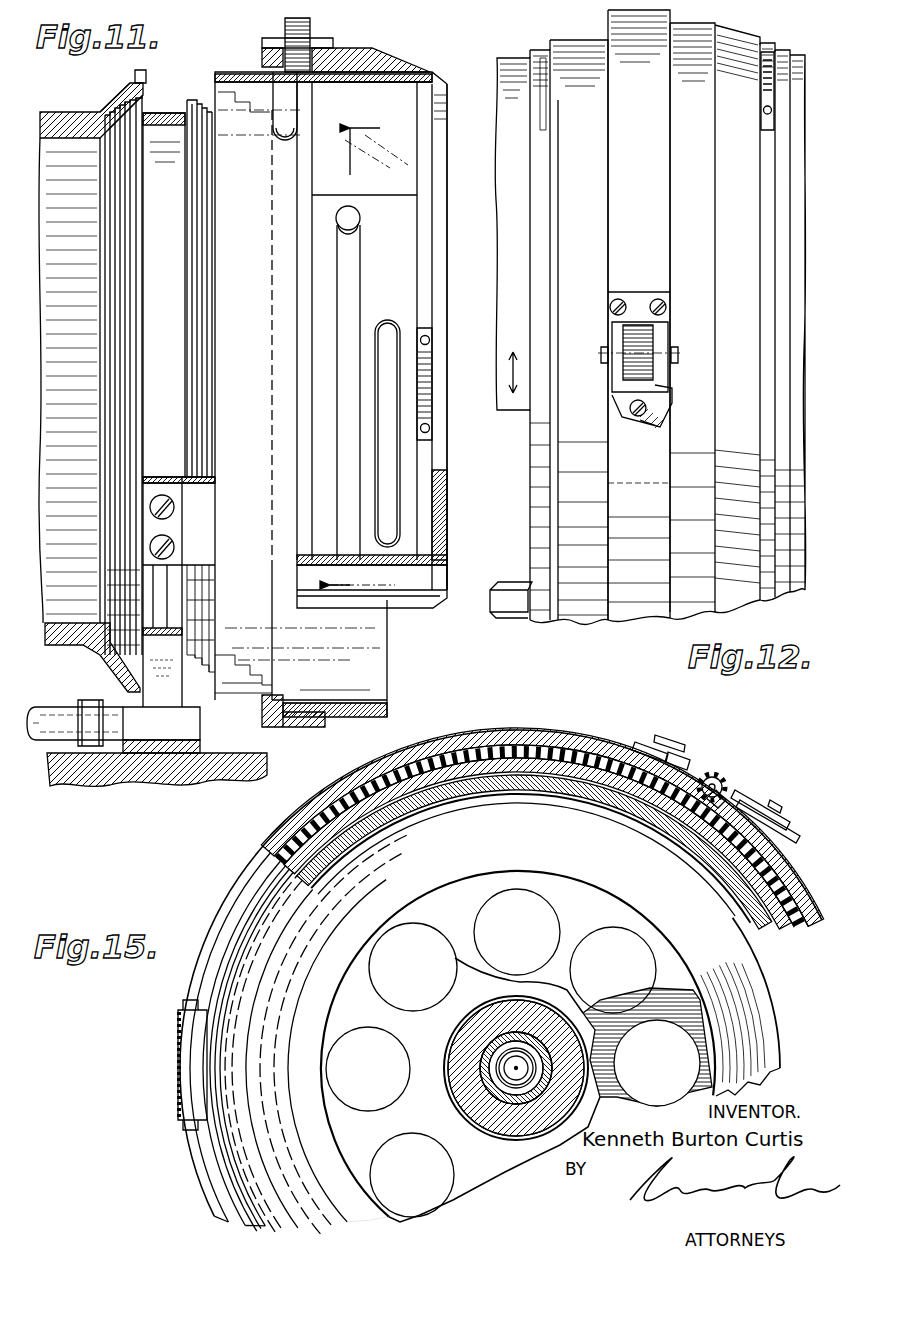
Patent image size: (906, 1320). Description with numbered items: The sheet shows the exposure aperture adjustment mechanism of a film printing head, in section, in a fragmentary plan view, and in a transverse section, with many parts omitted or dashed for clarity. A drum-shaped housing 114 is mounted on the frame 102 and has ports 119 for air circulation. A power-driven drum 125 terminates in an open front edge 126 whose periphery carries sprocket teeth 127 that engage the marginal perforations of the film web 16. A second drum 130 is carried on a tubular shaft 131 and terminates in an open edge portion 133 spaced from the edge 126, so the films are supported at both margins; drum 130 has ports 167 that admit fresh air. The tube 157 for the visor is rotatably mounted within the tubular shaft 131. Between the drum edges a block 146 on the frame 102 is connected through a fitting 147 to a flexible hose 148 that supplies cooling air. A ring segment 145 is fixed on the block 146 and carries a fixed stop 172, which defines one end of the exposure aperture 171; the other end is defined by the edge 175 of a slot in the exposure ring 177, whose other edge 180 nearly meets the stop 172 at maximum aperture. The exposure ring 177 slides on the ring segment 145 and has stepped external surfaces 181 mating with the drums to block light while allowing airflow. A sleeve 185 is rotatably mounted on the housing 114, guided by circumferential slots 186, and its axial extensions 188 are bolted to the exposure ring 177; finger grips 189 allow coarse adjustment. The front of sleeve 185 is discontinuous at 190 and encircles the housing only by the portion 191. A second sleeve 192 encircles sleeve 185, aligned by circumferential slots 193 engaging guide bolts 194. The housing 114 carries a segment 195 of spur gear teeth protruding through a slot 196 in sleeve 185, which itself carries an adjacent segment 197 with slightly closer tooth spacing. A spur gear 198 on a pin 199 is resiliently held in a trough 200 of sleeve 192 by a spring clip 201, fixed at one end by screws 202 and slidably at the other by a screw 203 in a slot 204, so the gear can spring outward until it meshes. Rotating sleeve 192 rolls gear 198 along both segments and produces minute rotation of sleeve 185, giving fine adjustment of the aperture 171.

In FIG. 11, the frame 102 is at (68, 775).
In FIG. 11, the drum shaped housing 114 is at (392, 92).
In FIG. 12, the drum shaped housing 114 is at (795, 258).
In FIG. 15, the drum shaped housing 114 is at (503, 790).
In FIG. 15, the ports 119 is at (368, 1038).
In FIG. 11, the drum 125 is at (46, 112).
In FIG. 11, the open front edge 126 is at (146, 74).
In FIG. 11, the sprocket teeth 127 is at (136, 78).
In FIG. 11, the drum 130 is at (235, 130).
In FIG. 12, the drum 130 is at (543, 82).
In FIG. 15, the drum 130 is at (574, 853).
In FIG. 15, the tubular shaft 131 is at (478, 1050).
In FIG. 11, the open edge portion 133 is at (186, 85).
In FIG. 15, the ring segment 145 is at (366, 860).
In FIG. 11, the block 146 is at (190, 716).
In FIG. 11, the fitting 147 is at (108, 703).
In FIG. 11, the flexible hose 148 is at (50, 707).
In FIG. 15, the tube 157 is at (493, 1078).
In FIG. 15, the ports 167 is at (435, 945).
In FIG. 12, the exposure aperture 171 is at (597, 500).
In FIG. 12, the fixed stop 172 is at (533, 580).
In FIG. 15, the fixed stop 172 is at (410, 830).
In FIG. 12, the edge 175 is at (524, 414).
In FIG. 15, the edge 175 is at (628, 826).
In FIG. 11, the exposure ring 177 is at (152, 452).
In FIG. 12, the exposure ring 177 is at (507, 212).
In FIG. 15, the exposure ring 177 is at (660, 850).
In FIG. 12, the edge 180 is at (512, 614).
In FIG. 15, the edge 180 is at (420, 805).
In FIG. 11, the stepped external surfaces 181 is at (122, 98).
In FIG. 11, the sleeve 185 is at (428, 162).
In FIG. 12, the sleeve 185 is at (780, 52).
In FIG. 15, the sleeve 185 is at (497, 760).
In FIG. 11, the circumferential slots 186 is at (392, 442).
In FIG. 11, the axial extensions 188 is at (148, 508).
In FIG. 11, the finger grips 189 is at (432, 372).
In FIG. 12, the finger grips 189 is at (781, 76).
In FIG. 15, the finger grips 189 is at (185, 1062).
In FIG. 11, the discontinuous portion 190 is at (412, 606).
In FIG. 11, the encircling portion 191 is at (340, 578).
In FIG. 11, the second sleeve 192 is at (390, 62).
In FIG. 12, the second sleeve 192 is at (744, 175).
In FIG. 15, the second sleeve 192 is at (232, 890).
In FIG. 11, the circumferential slots 193 is at (358, 268).
In FIG. 11, the guide bolts 194 is at (360, 216).
In FIG. 15, the segment of spur gear teeth 195 is at (285, 838).
In FIG. 11, the slot 196 is at (262, 66).
In FIG. 11, the segment of spur gear teeth 197 is at (300, 120).
In FIG. 15, the segment of spur gear teeth 197 is at (552, 745).
In FIG. 11, the spur gear 198 is at (312, 32).
In FIG. 12, the spur gear 198 is at (655, 338).
In FIG. 15, the spur gear 198 is at (706, 772).
In FIG. 11, the pin 199 is at (316, 82).
In FIG. 12, the pin 199 is at (618, 362).
In FIG. 15, the pin 199 is at (720, 778).
In FIG. 15, the trough 200 is at (745, 812).
In FIG. 11, the spring clip 201 is at (278, 38).
In FIG. 12, the spring clip 201 is at (612, 326).
In FIG. 15, the spring clip 201 is at (645, 745).
In FIG. 12, the screws 202 is at (656, 298).
In FIG. 15, the screws 202 is at (768, 800).
In FIG. 12, the screw 203 is at (648, 404).
In FIG. 15, the screw 203 is at (670, 745).
In FIG. 12, the slot 204 is at (640, 428).
In FIG. 11, the film web 16 is at (364, 356).